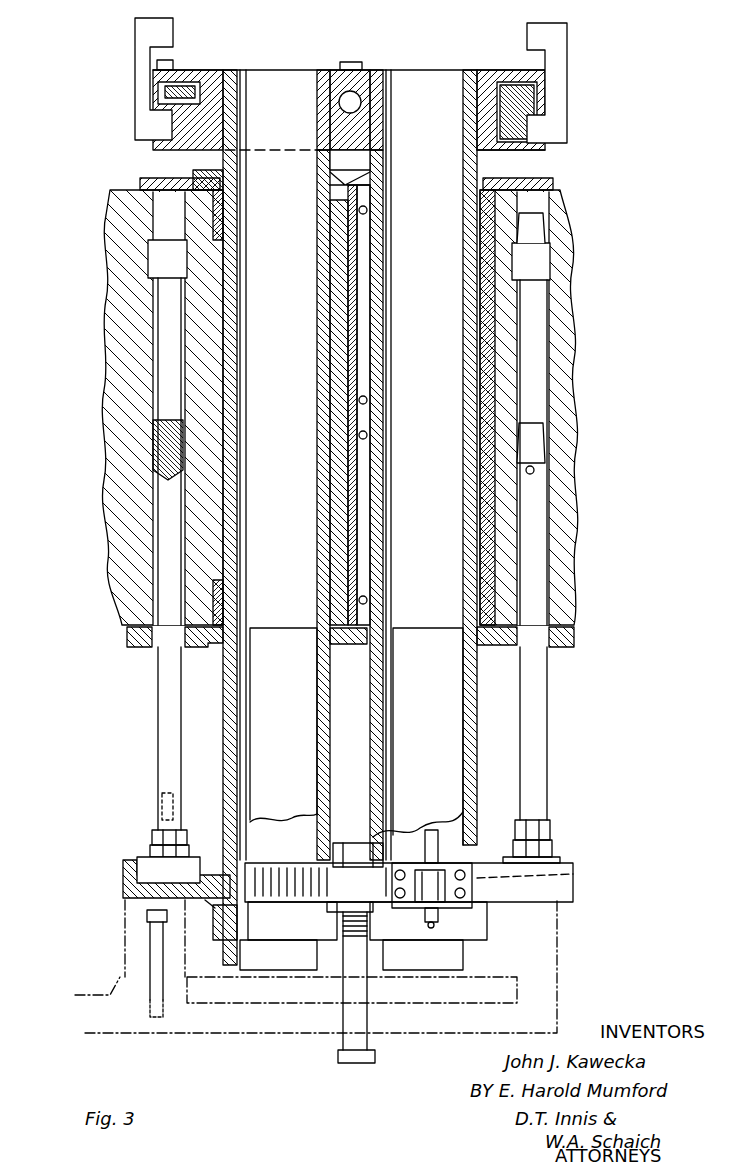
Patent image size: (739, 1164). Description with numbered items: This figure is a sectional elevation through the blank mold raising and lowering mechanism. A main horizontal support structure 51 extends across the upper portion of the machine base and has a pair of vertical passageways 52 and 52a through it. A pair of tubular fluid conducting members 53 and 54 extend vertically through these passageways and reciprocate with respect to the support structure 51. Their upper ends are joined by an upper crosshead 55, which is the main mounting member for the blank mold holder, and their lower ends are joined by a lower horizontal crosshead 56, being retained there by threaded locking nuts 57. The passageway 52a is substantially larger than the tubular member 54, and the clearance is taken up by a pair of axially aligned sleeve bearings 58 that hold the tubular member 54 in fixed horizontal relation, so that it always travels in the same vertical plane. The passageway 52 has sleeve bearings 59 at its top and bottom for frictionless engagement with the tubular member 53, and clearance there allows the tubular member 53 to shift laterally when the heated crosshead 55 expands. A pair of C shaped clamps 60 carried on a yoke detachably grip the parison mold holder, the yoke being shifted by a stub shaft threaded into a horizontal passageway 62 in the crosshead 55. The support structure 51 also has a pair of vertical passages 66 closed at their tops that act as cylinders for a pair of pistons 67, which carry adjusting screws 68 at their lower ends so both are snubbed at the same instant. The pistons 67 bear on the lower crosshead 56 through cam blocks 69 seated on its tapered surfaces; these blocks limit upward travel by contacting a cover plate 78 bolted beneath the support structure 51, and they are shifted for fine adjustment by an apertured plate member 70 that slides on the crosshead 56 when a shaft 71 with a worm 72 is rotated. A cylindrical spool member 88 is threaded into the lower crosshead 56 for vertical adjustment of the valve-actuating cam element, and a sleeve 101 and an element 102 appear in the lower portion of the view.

The main horizontal support structure 51 is at (577, 434).
The vertical passageway 52 is at (248, 312).
The vertical passageway 52a is at (470, 312).
The tubular fluid conducting member 53 is at (230, 682).
The tubular fluid conducting member 54 is at (467, 687).
The upper crosshead 55 is at (210, 78).
The lower horizontal crosshead 56 is at (557, 890).
The threaded locking nut 57 is at (217, 917).
The sleeve bearing 58 is at (500, 238).
The sleeve bearing 59 is at (213, 217).
The C shaped clamp 60 is at (135, 37).
The horizontal passageway 62 is at (352, 98).
The vertical passage 66 is at (163, 355).
The piston 67 is at (167, 702).
The adjusting screw 68 is at (163, 833).
The cam block 69 is at (145, 872).
The apertured plate member 70 is at (123, 865).
The shaft 71 is at (433, 843).
The worm 72 is at (443, 885).
The cover plate 78 is at (128, 633).
The cylindrical spool member 88 is at (347, 1017).
The sleeve 101 is at (233, 955).
The block 102 is at (437, 957).